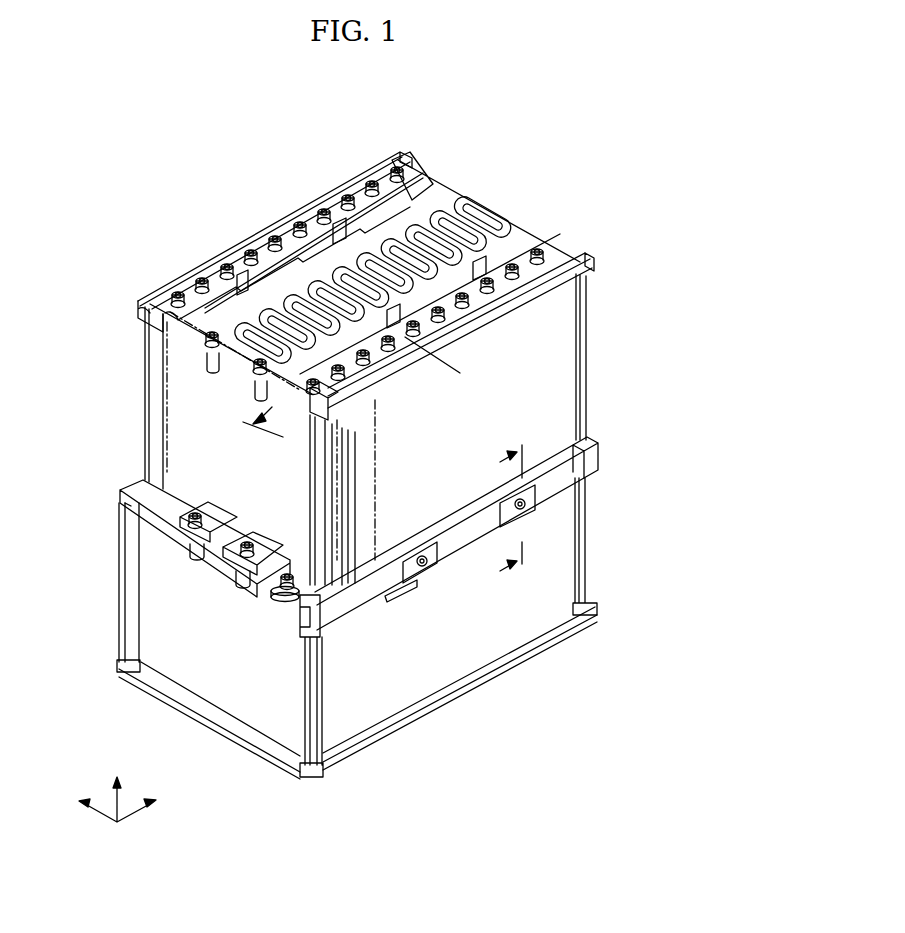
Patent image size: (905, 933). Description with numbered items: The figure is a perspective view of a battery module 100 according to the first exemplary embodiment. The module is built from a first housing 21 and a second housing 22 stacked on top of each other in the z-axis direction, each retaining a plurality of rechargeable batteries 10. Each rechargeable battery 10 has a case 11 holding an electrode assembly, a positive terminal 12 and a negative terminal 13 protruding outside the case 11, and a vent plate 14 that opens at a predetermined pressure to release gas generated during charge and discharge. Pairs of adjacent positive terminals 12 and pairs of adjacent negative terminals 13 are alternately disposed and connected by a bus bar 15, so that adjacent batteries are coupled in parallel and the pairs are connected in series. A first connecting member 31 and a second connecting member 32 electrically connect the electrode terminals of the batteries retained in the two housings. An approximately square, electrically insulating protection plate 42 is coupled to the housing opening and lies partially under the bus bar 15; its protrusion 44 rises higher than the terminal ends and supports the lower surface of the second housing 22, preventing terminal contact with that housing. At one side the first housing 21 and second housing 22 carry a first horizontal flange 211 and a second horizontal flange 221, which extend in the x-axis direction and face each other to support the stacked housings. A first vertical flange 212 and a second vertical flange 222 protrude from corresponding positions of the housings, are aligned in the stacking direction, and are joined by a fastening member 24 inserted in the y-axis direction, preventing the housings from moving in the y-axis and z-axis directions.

The battery module 100 is at (383, 99).
The rechargeable battery 10 is at (379, 509).
The case 11 is at (165, 394).
The positive terminal 12 is at (208, 288).
The negative terminal 13 is at (160, 318).
The vent plate 14 is at (488, 212).
The bus bar 15 is at (280, 230).
The first housing 21 is at (592, 582).
The second housing 22 is at (591, 348).
The fastening member 24 is at (540, 505).
The first connecting member 31 is at (278, 602).
The second connecting member 32 is at (292, 520).
The protection plate 42 is at (440, 194).
The protrusion 44 is at (166, 292).
The first horizontal flange 211 is at (175, 533).
The first vertical flange 212 is at (553, 496).
The second horizontal flange 221 is at (153, 501).
The second vertical flange 222 is at (600, 460).